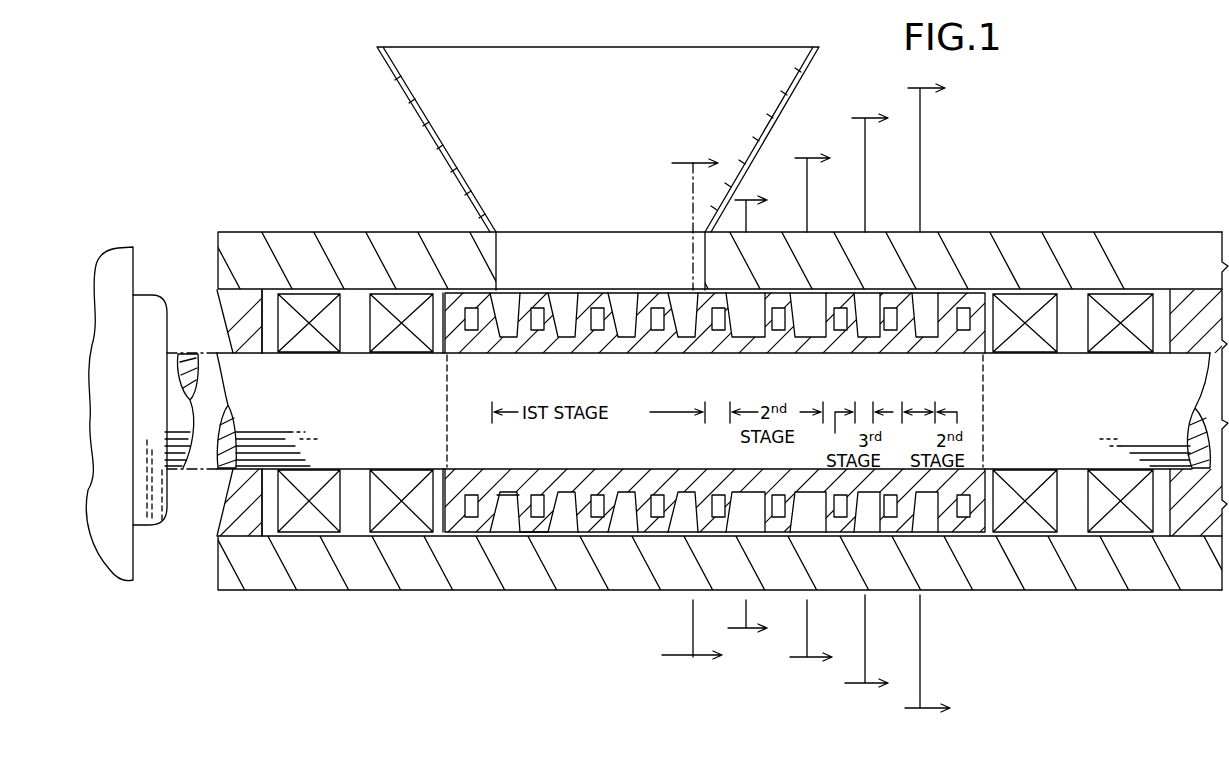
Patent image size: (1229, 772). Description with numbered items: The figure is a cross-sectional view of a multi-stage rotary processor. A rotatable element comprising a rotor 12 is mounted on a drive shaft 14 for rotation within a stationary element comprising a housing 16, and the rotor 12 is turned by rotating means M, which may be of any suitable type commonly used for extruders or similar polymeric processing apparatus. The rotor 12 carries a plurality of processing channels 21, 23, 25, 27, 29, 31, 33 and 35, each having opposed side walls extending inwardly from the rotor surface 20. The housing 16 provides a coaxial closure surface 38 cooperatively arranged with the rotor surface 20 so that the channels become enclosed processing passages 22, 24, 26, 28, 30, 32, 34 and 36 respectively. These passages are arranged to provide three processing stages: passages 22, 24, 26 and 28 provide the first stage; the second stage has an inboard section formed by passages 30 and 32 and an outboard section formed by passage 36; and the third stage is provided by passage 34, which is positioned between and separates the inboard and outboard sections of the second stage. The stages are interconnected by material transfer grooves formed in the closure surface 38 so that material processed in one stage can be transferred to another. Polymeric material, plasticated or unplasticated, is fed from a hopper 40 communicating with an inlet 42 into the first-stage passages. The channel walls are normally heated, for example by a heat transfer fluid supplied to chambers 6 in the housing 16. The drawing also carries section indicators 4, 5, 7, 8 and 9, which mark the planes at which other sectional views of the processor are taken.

The means for rotating rotor M is at (128, 268).
The section line 4- 4 is at (681, 413).
The section line 5- 5 is at (757, 417).
The chambers 6 is at (540, 508).
The section line 7- 7 is at (821, 410).
The section line 8- 8 is at (937, 401).
The section line 9- 9 is at (875, 404).
The rotor 12 is at (502, 503).
The drive shaft 14 is at (366, 409).
The housing 16 is at (1002, 249).
The rotor surface 20 is at (658, 297).
The processing channel 21 is at (508, 300).
The processing passage 22 is at (502, 500).
The processing channel 23 is at (568, 300).
The processing passage 24 is at (565, 510).
The processing channel 25 is at (627, 300).
The processing passage 26 is at (629, 492).
The processing channel 27 is at (696, 300).
The processing passage 28 is at (644, 530).
The processing channel 29 is at (748, 332).
The processing passage 30 is at (693, 527).
The processing channel 31 is at (800, 332).
The processing passage 32 is at (812, 518).
The processing channel 33 is at (864, 332).
The processing passage 34 is at (866, 520).
The processing channel 35 is at (925, 332).
The processing passage 36 is at (925, 520).
The coaxial closure surface 38 is at (810, 300).
The hopper 40 is at (766, 131).
The inlet 42 is at (500, 254).